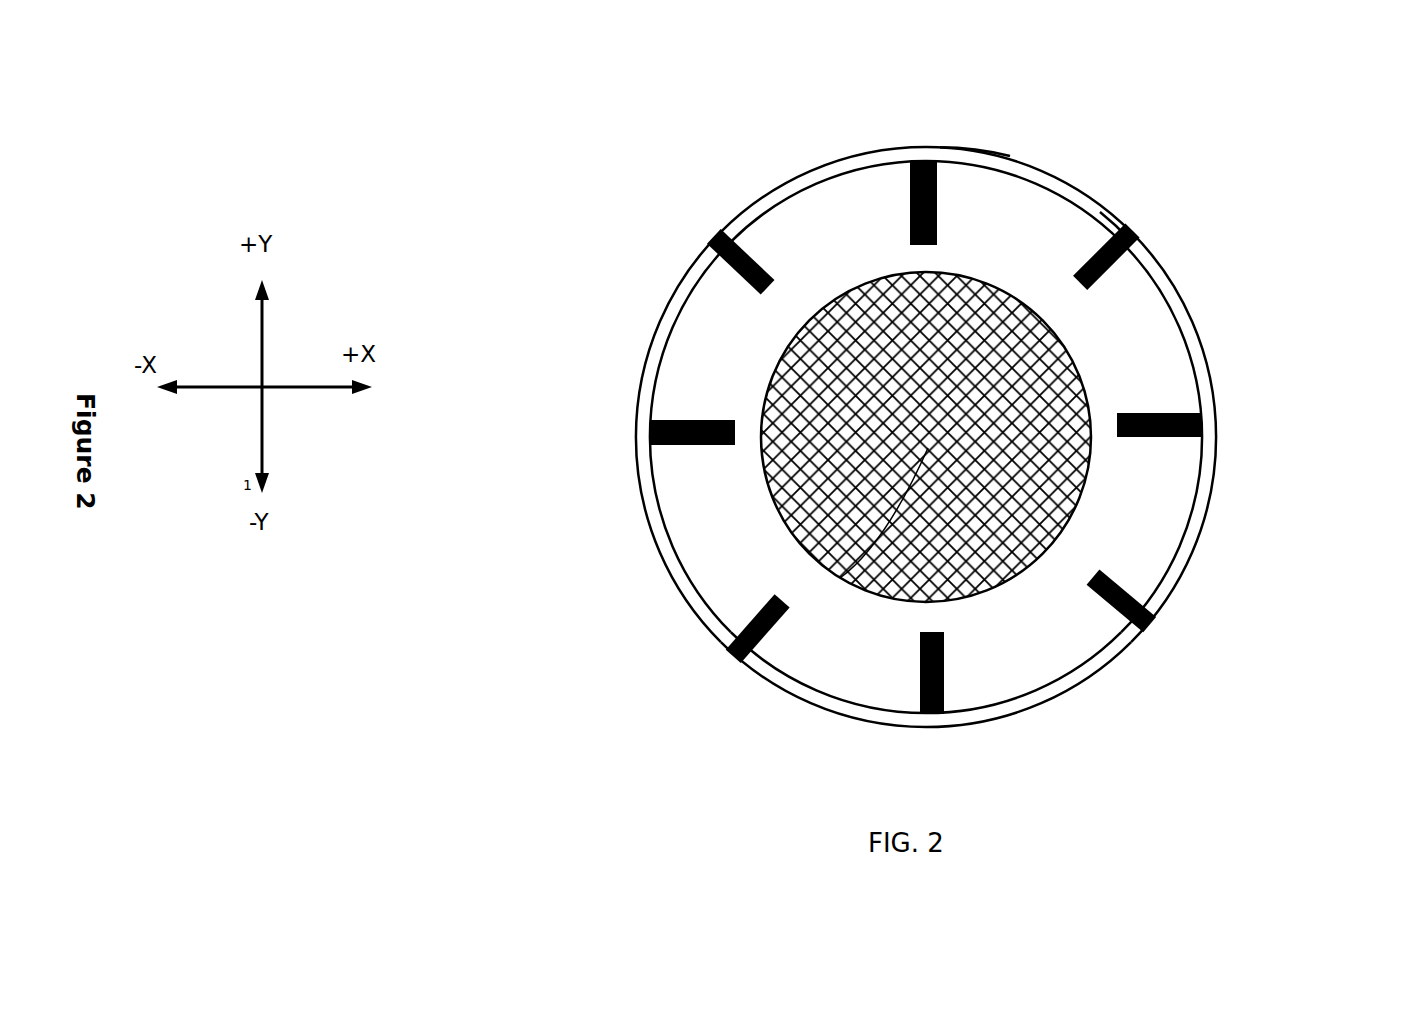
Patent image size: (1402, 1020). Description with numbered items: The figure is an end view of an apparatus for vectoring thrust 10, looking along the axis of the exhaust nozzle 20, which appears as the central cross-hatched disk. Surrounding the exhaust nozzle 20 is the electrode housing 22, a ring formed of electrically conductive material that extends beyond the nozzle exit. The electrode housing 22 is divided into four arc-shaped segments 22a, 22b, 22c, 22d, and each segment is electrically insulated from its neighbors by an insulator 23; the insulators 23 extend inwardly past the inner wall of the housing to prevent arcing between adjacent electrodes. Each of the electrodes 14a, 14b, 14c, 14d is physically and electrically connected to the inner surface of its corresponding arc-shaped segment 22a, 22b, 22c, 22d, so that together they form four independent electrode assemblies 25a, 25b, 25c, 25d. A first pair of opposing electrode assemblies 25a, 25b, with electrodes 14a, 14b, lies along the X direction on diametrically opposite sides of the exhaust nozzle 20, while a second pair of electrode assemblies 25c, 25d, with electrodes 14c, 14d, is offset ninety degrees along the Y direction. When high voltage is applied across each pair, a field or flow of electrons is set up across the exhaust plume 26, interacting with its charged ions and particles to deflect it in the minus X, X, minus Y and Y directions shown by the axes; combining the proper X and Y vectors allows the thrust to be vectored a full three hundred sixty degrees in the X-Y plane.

The apparatus for vectoring thrust 10 is at (1133, 180).
The electrode 14a is at (697, 446).
The electrode 14b is at (1158, 413).
The electrode 14c is at (908, 213).
The electrode 14d is at (933, 715).
The exhaust nozzle 20 is at (1037, 572).
The electrode housing 22 is at (997, 147).
The arc-shaped segment 22a is at (643, 347).
The arc-shaped segment 22b is at (1168, 267).
The arc-shaped segment 22c is at (800, 163).
The arc-shaped segment 22d is at (782, 698).
The insulator 23 is at (718, 235).
The electrode assembly 25a is at (645, 542).
The electrode assembly 25b is at (1215, 503).
The electrode assembly 25c is at (897, 140).
The electrode assembly 25d is at (892, 735).
The exhaust plume 26 is at (840, 578).